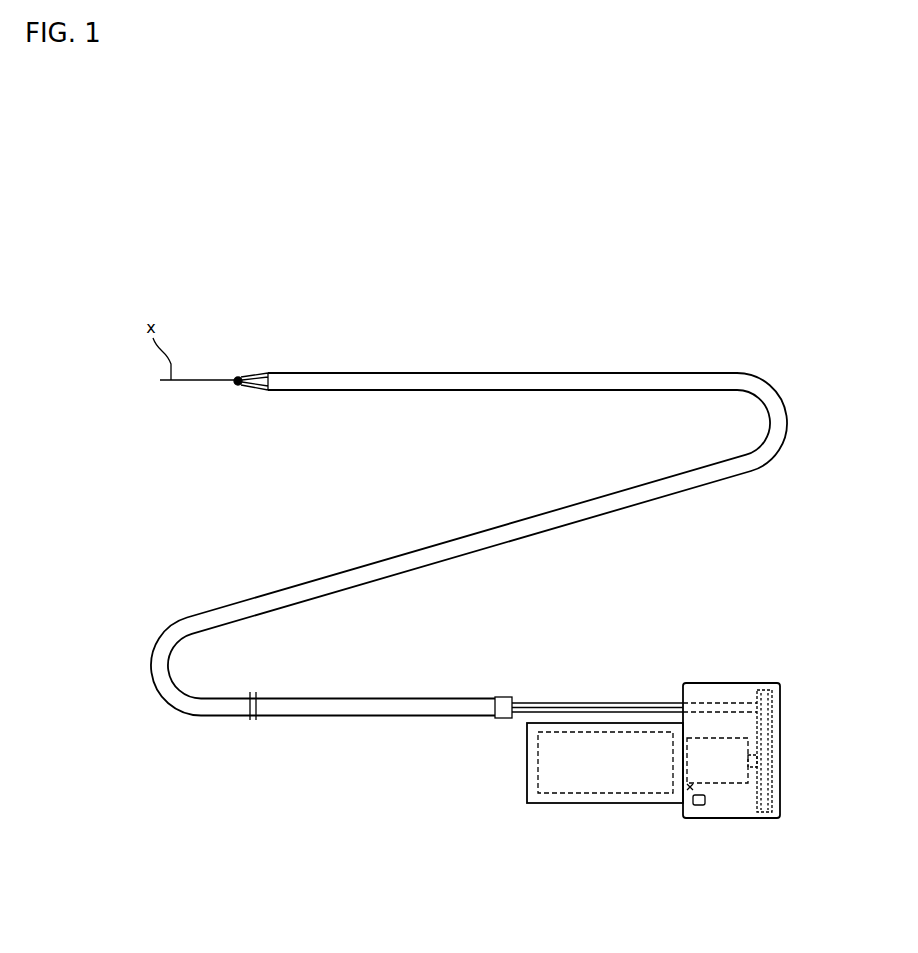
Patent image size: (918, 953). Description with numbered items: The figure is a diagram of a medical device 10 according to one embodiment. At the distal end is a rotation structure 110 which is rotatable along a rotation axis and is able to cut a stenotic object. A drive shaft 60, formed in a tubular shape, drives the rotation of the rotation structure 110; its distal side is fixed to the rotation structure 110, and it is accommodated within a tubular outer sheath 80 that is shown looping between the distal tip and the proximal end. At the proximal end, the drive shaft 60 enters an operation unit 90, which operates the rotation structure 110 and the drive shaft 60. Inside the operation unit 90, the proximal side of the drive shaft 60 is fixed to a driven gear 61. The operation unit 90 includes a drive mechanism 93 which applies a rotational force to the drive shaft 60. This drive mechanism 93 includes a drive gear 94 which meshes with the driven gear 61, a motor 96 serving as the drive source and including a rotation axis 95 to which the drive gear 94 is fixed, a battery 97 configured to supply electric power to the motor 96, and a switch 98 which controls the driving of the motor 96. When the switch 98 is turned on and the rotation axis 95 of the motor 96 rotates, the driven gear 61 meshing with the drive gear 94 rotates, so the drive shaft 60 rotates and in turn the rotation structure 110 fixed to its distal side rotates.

The medical device 10 is at (243, 217).
The rotation structure 110 is at (246, 365).
The tubular outer sheath 80 is at (400, 390).
The drive shaft 60 is at (548, 701).
The operation unit 90 is at (722, 683).
The driven gear 61 is at (768, 692).
The motor 96 is at (710, 742).
The drive gear 94 is at (757, 763).
The rotation axis 95 is at (748, 786).
The drive mechanism 93 is at (767, 790).
The switch 98 is at (691, 806).
The battery 97 is at (602, 782).